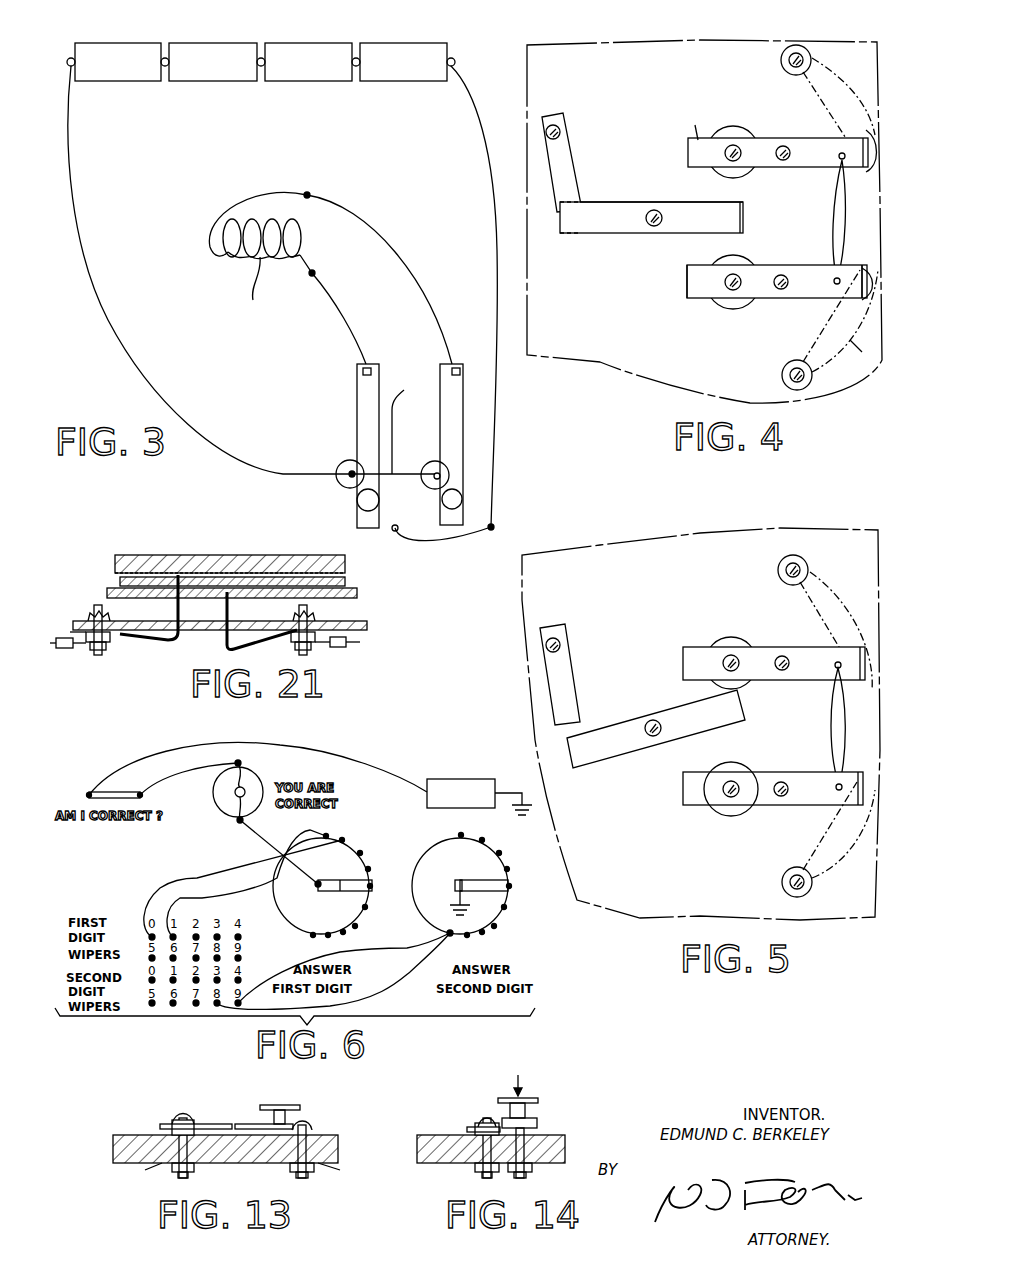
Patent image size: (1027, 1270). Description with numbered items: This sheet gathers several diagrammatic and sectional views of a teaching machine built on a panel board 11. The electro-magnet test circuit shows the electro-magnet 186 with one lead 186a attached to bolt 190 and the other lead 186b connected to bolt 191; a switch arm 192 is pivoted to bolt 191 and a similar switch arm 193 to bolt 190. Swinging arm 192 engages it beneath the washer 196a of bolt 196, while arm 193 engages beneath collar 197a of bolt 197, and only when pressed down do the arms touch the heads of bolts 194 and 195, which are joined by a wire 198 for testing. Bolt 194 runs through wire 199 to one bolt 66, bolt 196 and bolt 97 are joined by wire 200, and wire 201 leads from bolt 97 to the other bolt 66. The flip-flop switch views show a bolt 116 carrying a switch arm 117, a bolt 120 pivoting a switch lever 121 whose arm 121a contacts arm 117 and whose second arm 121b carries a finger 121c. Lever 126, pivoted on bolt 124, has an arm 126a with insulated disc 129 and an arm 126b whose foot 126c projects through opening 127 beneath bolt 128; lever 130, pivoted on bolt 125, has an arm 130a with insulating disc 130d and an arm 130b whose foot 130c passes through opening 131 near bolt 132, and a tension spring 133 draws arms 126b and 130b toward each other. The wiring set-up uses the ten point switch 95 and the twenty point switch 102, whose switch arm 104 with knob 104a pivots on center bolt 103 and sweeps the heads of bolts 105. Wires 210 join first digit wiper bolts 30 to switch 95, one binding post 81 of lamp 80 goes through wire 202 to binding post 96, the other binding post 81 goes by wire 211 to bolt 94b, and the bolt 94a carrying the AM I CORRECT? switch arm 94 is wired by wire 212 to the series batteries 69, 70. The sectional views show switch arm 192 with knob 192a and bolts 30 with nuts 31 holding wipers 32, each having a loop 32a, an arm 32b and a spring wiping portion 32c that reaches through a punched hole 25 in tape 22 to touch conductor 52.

In FIG. 21, the panel board 11 is at (350, 631).
In FIG. 14, the panel board 11 is at (545, 1145).
In FIG. 21, the tape 22 is at (118, 583).
In FIG. 21, the punched holes 25 is at (176, 570).
In FIG. 21, the bolts 30 is at (94, 614).
In FIG. 21, the nuts 31 is at (72, 650).
In FIG. 21, the wipers 32 is at (118, 645).
In FIG. 21, the loop 32a is at (82, 634).
In FIG. 21, the arm 32b is at (146, 642).
In FIG. 21, the spring wiping portion 32c is at (176, 608).
In FIG. 21, the conductor 52 is at (215, 568).
In FIG. 3, the bolts 66 is at (70, 58).
In FIG. 3, the dry batteries 69 is at (132, 72).
In FIG. 6, the dry batteries 69 is at (452, 779).
In FIG. 3, the dry batteries 70 is at (322, 72).
In FIG. 6, the dry batteries 70 is at (460, 794).
In FIG. 6, the lamp 80 is at (224, 806).
In FIG. 6, the binding posts 81 is at (244, 765).
In FIG. 6, the switch arm 94 is at (110, 792).
In FIG. 6, the bolt 94a is at (88, 793).
In FIG. 6, the bolt 94b is at (148, 785).
In FIG. 6, the ten point switch 95 is at (262, 878).
In FIG. 6, the binding post 96 is at (325, 880).
In FIG. 6, the bolt 97 is at (338, 893).
In FIG. 6, the twenty point switch 102 is at (428, 850).
In FIG. 6, the center bolt 103 is at (455, 880).
In FIG. 13, the center bolt 103 is at (188, 1112).
In FIG. 6, the switch arm 104 is at (478, 880).
In FIG. 13, the switch arm 104 is at (218, 1124).
In FIG. 13, the knob 104a is at (278, 1105).
In FIG. 13, the bolts 105 is at (309, 1128).
In FIG. 4, the bolt 116 is at (560, 128).
In FIG. 4, the switch arm 117 is at (568, 162).
In FIG. 5, the switch arm 117 is at (572, 680).
In FIG. 4, the bolt 120 is at (653, 233).
In FIG. 4, the switch lever 121 is at (637, 195).
In FIG. 5, the switch lever 121 is at (634, 738).
In FIG. 4, the arm 121a is at (590, 238).
In FIG. 4, the second arm 121b is at (704, 200).
In FIG. 4, the finger 121c is at (746, 218).
In FIG. 4, the bolt 124 is at (782, 146).
In FIG. 5, the bolt 124 is at (782, 680).
In FIG. 4, the bolt 125 is at (778, 292).
In FIG. 5, the bolt 125 is at (780, 800).
In FIG. 4, the lever 126 is at (717, 108).
In FIG. 5, the lever 126 is at (803, 640).
In FIG. 4, the arm 126a is at (675, 119).
In FIG. 4, the arm 126b is at (813, 142).
In FIG. 4, the foot 126c is at (863, 139).
In FIG. 4, the opening 127 is at (842, 90).
In FIG. 4, the bolt 128 is at (802, 50).
In FIG. 5, the bolt 128 is at (778, 566).
In FIG. 4, the insulated disc 129 is at (730, 128).
In FIG. 4, the lever 130 is at (700, 306).
In FIG. 5, the lever 130 is at (806, 765).
In FIG. 4, the arm 130a is at (695, 280).
In FIG. 4, the second arm 130b is at (800, 292).
In FIG. 4, the foot 130c is at (866, 262).
In FIG. 4, the insulating disc 130d is at (738, 258).
In FIG. 4, the opening 131 is at (848, 348).
In FIG. 4, the bolt 132 is at (782, 378).
In FIG. 5, the bolt 132 is at (782, 884).
In FIG. 4, the tension spring 133 is at (832, 236).
In FIG. 3, the electro-magnet 186 is at (262, 258).
In FIG. 3, the lead 186a is at (353, 330).
In FIG. 3, the lead 186b is at (430, 300).
In FIG. 3, the bolt 190 is at (362, 373).
In FIG. 3, the bolt 191 is at (461, 372).
In FIG. 3, the switch arm 192 is at (458, 441).
In FIG. 14, the switch arm 192 is at (528, 1120).
In FIG. 14, the knob 192a is at (520, 1098).
In FIG. 3, the switch arm 193 is at (366, 422).
In FIG. 3, the bolt 194 is at (492, 527).
In FIG. 14, the bolt 194 is at (530, 1175).
In FIG. 3, the bolt 195 is at (396, 535).
In FIG. 3, the bolt 196 is at (430, 486).
In FIG. 14, the bolt 196 is at (486, 1120).
In FIG. 3, the washer 196a is at (430, 463).
In FIG. 14, the washer 196a is at (474, 1125).
In FIG. 3, the bolt 197 is at (345, 480).
In FIG. 3, the collar 197a is at (340, 470).
In FIG. 3, the wire 198 is at (445, 538).
In FIG. 3, the wire 199 is at (495, 467).
In FIG. 3, the wire 200 is at (408, 421).
In FIG. 3, the wire 201 is at (213, 448).
In FIG. 6, the wire 201 is at (400, 952).
In FIG. 6, the wire 202 is at (304, 882).
In FIG. 6, the wires 210 is at (200, 897).
In FIG. 6, the wire 211 is at (203, 773).
In FIG. 6, the wire 212 is at (315, 758).